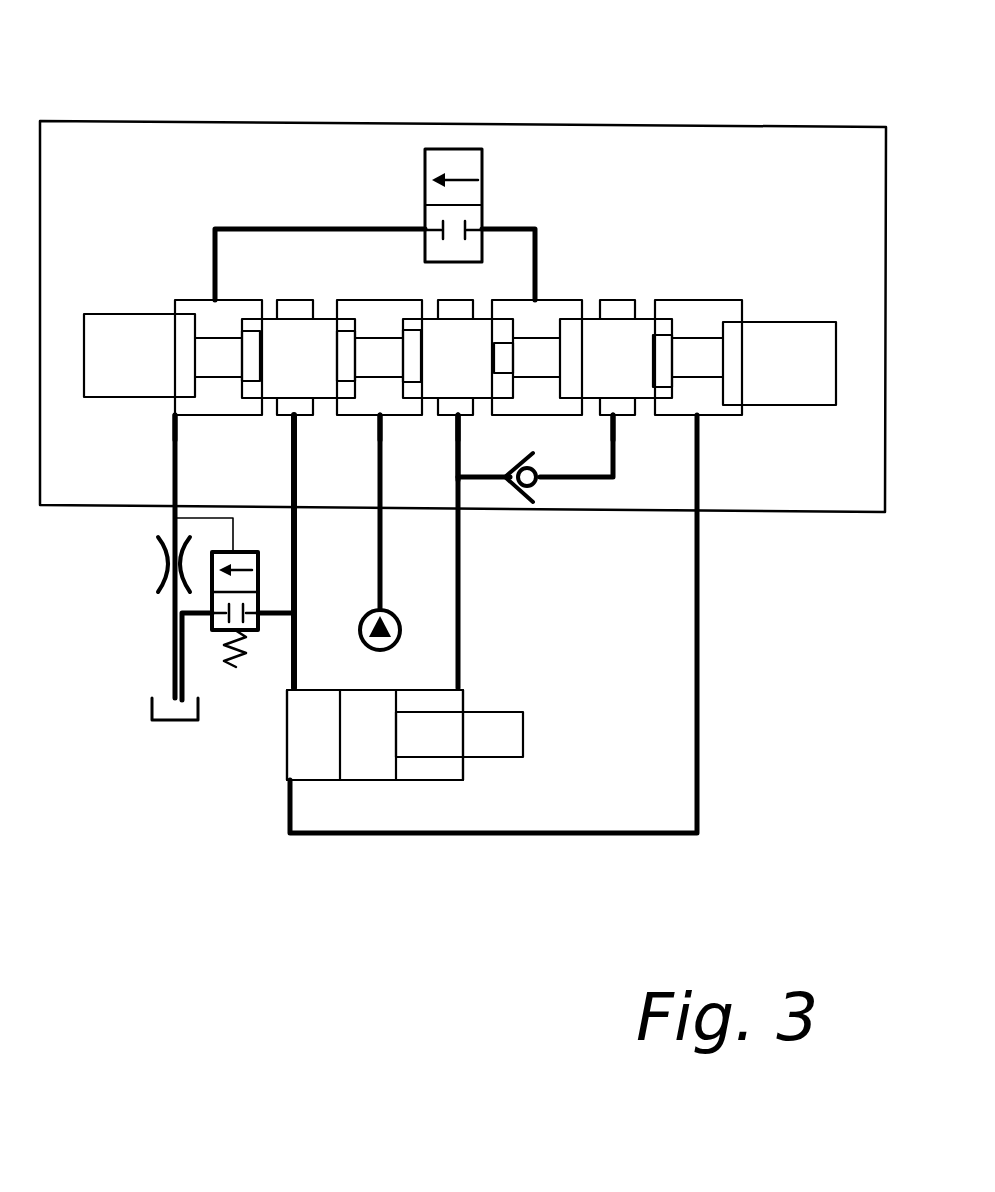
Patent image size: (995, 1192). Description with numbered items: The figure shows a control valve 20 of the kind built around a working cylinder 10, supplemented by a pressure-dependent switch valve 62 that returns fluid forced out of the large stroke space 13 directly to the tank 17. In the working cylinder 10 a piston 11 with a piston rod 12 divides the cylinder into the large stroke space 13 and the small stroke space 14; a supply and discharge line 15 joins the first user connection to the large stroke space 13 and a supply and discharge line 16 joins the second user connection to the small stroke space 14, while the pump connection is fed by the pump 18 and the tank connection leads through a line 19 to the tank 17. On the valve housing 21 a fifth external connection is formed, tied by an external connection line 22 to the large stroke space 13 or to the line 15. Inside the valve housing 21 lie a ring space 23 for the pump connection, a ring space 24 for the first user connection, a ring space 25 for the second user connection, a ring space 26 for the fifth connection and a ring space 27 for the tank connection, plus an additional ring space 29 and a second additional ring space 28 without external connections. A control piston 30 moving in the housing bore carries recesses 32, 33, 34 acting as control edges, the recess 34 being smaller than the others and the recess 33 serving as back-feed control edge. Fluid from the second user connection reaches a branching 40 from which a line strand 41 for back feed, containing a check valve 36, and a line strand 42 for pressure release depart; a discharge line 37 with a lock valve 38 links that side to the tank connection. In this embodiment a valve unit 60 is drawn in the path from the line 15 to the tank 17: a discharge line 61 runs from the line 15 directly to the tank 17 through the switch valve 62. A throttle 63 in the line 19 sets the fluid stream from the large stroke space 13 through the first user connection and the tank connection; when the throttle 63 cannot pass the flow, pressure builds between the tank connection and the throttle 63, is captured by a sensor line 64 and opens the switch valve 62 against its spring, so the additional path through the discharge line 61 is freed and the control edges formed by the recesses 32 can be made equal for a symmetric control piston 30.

The working cylinder 10 is at (443, 810).
The piston 11 is at (370, 762).
The piston rod 12 is at (512, 740).
The large stroke space 13 is at (313, 762).
The small stroke space 14 is at (428, 765).
The supply and discharge line 15 is at (297, 643).
The supply and discharge line 16 is at (462, 612).
The tank 17 is at (152, 717).
The pump 18 is at (377, 652).
The line 19 is at (172, 514).
The control valve 20 is at (832, 106).
The valve housing 21 is at (765, 121).
The external connection line 22 is at (700, 808).
The ring space 23 is at (390, 408).
The ring space 24 is at (300, 408).
The ring space 25 is at (463, 408).
The ring space 26 is at (710, 408).
The ring space 27 is at (212, 408).
The blocked port 28 is at (550, 408).
The additional ring space 29 is at (627, 408).
The control piston 30 is at (205, 360).
The recess 32 is at (253, 352).
The recess 33 is at (662, 358).
The recess 34 is at (502, 357).
The check valve 36 is at (532, 488).
The discharge line 37 is at (517, 226).
The lock valve 38 is at (449, 149).
The branching 40 is at (462, 480).
The line strand 41 is at (593, 477).
The line strand 42 is at (456, 437).
The pressure relief valve 60 is at (296, 601).
The discharge line 61 is at (186, 658).
The pressure-dependent switch valve 62 is at (248, 640).
The throttle 63 is at (163, 565).
The sensor line 64 is at (236, 526).